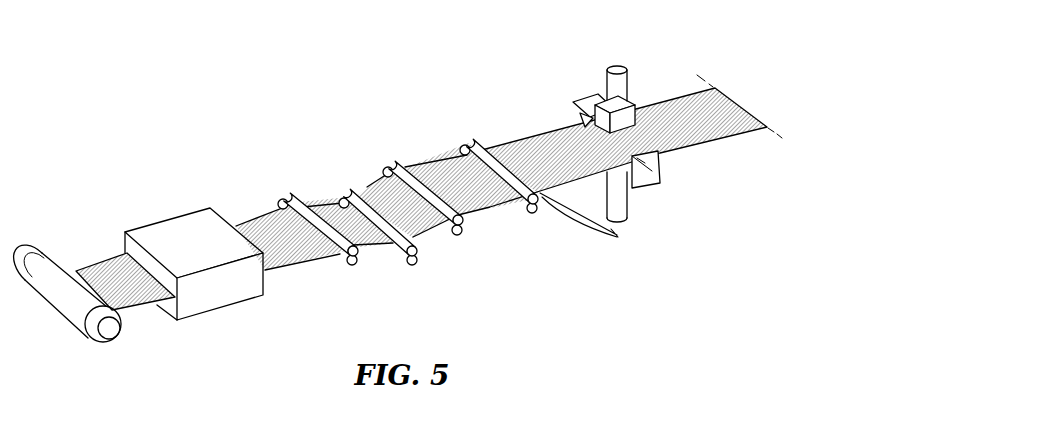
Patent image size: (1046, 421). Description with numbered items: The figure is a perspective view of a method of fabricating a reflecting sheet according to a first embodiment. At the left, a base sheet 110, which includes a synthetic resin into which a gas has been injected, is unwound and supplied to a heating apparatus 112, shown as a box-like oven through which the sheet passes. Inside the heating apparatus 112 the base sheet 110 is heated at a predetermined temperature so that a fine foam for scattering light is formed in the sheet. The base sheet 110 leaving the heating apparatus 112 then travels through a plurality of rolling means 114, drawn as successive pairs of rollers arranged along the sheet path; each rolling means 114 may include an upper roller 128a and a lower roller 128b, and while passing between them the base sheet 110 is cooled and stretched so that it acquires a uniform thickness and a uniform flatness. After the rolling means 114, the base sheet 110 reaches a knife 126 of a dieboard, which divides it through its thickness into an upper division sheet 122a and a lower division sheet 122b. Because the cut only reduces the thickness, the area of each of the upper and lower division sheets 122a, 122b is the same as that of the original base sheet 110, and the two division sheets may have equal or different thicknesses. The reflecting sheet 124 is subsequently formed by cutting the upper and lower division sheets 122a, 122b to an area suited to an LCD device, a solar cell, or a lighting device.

The base sheet 110 is at (103, 275).
The heating apparatus 112 is at (173, 237).
The rolling means 114 is at (528, 212).
The upper division sheet 122a is at (608, 228).
The lower division sheet 122b is at (583, 197).
The reflecting sheet 124 is at (692, 112).
The knife 126 is at (544, 197).
The upper roller 128a is at (468, 135).
The lower roller 128b is at (463, 153).